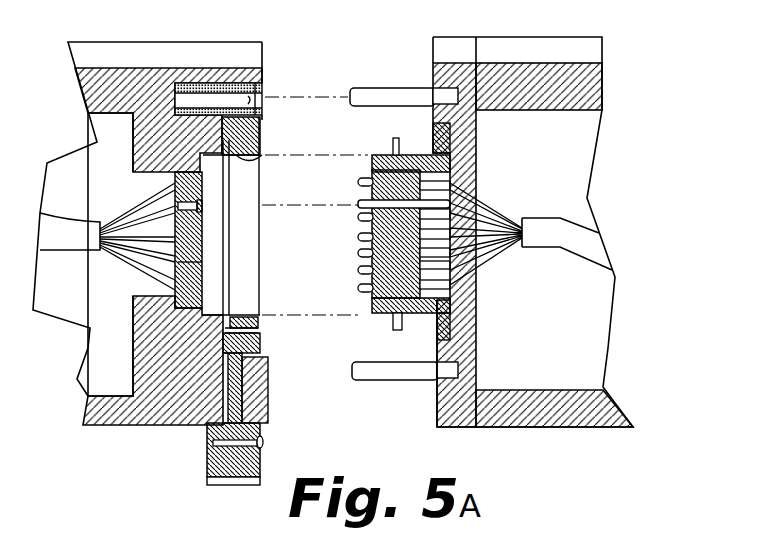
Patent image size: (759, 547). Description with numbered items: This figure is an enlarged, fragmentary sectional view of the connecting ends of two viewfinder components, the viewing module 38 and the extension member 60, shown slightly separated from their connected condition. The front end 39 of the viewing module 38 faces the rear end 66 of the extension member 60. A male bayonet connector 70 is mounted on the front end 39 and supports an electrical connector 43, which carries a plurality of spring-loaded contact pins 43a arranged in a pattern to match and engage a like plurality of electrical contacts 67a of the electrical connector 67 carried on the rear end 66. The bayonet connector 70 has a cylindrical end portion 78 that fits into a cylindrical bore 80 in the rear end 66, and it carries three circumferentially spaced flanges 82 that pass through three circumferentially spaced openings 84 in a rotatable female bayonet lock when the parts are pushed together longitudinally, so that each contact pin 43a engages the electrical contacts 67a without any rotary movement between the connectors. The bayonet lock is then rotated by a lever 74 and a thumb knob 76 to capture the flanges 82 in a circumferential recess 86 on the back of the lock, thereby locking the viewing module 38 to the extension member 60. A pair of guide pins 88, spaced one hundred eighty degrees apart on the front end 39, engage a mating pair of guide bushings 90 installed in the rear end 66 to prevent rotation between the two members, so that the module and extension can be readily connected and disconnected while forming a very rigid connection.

The viewing module 38 is at (508, 428).
The front end of the viewing module 39 is at (437, 398).
The electrical connector 43 is at (368, 298).
The contact pins 43a is at (360, 204).
The extension member 60 is at (162, 42).
The rear end of the extension member 66 is at (264, 90).
The electrical connector 67 is at (203, 313).
The electrical contacts 67a is at (202, 203).
The male bayonet connector 70 is at (408, 138).
The lever 74 is at (268, 362).
The thumb knob 76 is at (261, 458).
The cylindrical end portion 78 is at (373, 156).
The cylindrical bore 80 is at (210, 166).
The flanges 82 is at (393, 139).
The openings 84 is at (258, 152).
The circumferential recess 86 is at (226, 317).
The guide pins 88 is at (362, 90).
The guide bushings 90 is at (256, 100).